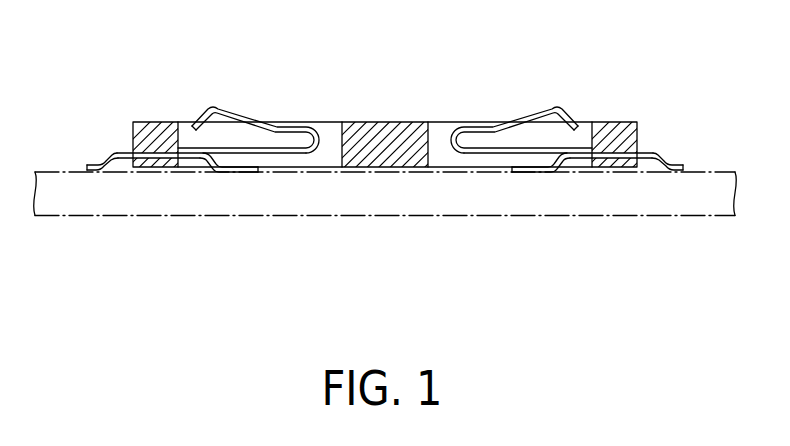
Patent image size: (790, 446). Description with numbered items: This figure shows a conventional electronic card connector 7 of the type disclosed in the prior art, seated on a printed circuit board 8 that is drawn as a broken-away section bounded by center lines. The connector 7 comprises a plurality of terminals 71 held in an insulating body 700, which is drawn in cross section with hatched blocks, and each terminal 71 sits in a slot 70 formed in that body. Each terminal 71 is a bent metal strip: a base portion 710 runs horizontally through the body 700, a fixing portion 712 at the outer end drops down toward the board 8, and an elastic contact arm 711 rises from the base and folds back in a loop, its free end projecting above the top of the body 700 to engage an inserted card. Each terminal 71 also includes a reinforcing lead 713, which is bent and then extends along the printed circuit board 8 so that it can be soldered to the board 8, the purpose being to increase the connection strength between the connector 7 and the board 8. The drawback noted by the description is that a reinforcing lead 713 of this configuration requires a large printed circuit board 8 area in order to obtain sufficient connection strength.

The electronic card connector 7 is at (378, 189).
The slot of insulating body 70 is at (337, 140).
The insulating body 700 is at (442, 132).
The terminal 71 is at (378, 218).
The base portion of terminal 710 is at (155, 155).
The elastic contact arm 711 is at (209, 110).
The fixing/tail portion 712 is at (97, 170).
The reinforcing lead 713 is at (229, 222).
The circuit board 8 is at (537, 217).